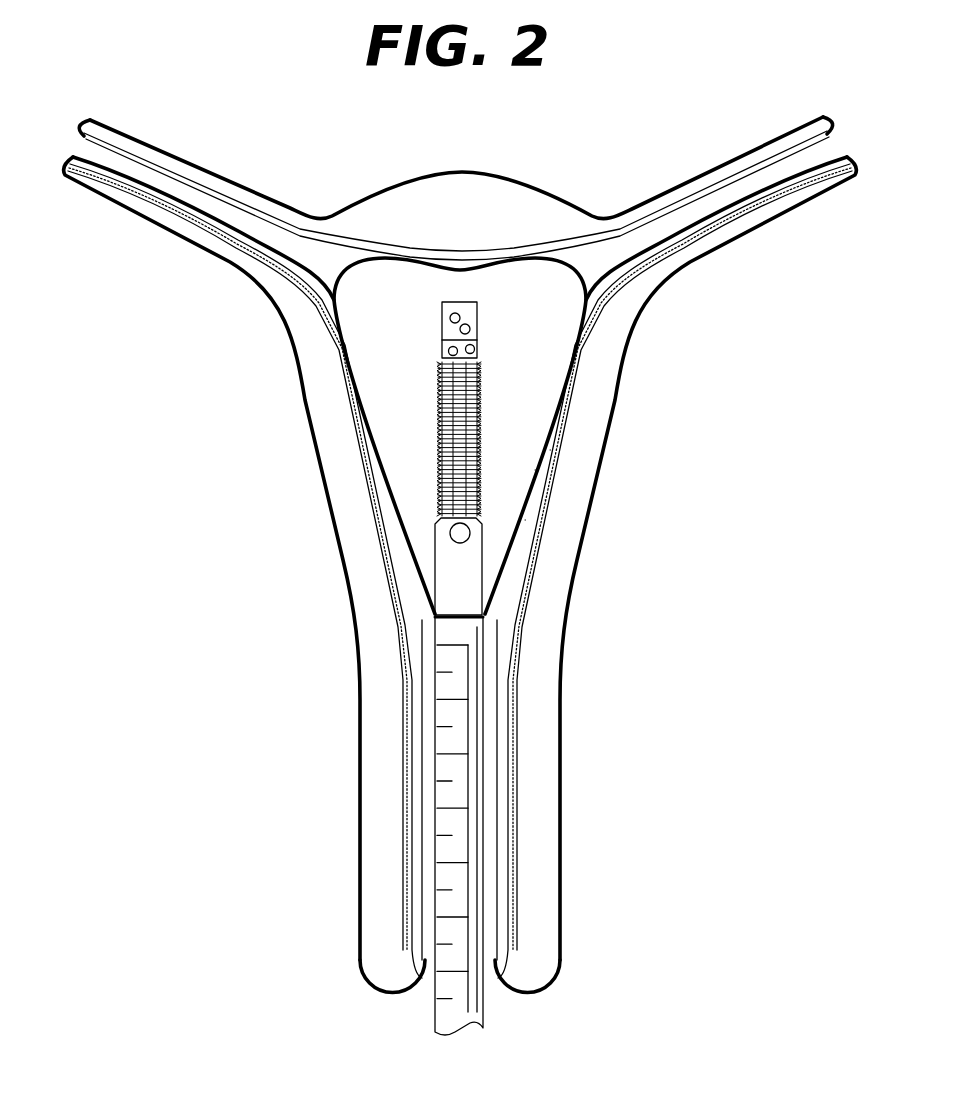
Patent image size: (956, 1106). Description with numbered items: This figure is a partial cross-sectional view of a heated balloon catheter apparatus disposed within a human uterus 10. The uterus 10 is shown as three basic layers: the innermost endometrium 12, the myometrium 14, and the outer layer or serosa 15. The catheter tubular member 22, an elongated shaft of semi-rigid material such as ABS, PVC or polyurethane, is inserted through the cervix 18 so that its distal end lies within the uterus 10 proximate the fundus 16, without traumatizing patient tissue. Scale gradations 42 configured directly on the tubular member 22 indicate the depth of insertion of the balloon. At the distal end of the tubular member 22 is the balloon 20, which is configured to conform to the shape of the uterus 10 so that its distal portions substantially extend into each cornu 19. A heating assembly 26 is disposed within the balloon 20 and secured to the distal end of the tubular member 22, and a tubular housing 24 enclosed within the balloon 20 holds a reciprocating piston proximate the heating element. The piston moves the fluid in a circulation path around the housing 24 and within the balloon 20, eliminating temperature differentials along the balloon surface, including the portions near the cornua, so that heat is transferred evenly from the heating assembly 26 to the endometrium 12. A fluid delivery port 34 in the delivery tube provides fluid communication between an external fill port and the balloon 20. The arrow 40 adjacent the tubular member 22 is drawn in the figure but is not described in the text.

The uterus 10 is at (180, 348).
The endometrium 12 is at (570, 373).
The myometrium 14 is at (582, 460).
The serosa 15 is at (567, 607).
The fundus 16 is at (469, 190).
The cervix 18 is at (521, 1000).
The cornu 19 is at (582, 270).
The balloon 20 is at (370, 410).
The catheter tubular member 22 is at (472, 680).
The tubular housing 24 is at (440, 318).
The heating assembly 26 is at (430, 478).
The fluid delivery port 34 is at (452, 536).
The insertion direction arrow 40 is at (490, 788).
The scale gradations 42 is at (452, 762).